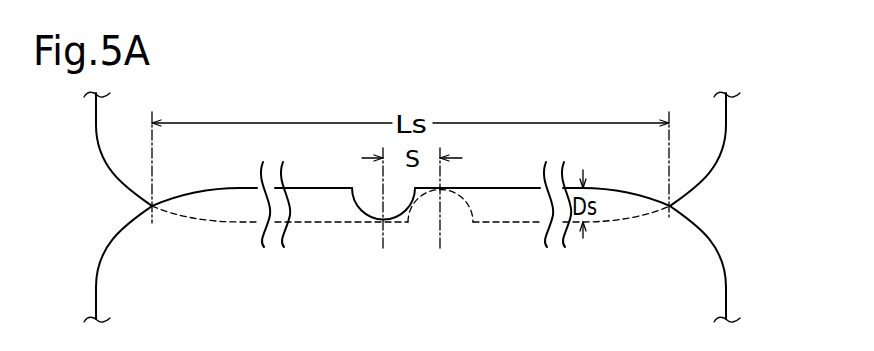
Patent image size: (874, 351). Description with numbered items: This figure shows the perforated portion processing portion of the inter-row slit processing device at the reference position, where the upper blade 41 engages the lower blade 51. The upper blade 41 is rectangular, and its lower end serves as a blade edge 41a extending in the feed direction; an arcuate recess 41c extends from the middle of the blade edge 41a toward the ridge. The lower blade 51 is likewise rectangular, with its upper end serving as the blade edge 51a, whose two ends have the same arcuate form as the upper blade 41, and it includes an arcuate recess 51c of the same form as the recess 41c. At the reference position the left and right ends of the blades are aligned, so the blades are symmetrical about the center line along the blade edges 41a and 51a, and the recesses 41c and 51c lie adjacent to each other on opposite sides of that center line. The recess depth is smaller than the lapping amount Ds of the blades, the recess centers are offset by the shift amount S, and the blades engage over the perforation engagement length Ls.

The upper blade 41 is at (727, 129).
The blade edge 41a is at (520, 222).
The recess 41c is at (470, 208).
The lower blade 51 is at (720, 252).
The blade edge 51a is at (238, 188).
The recess 51c is at (367, 212).